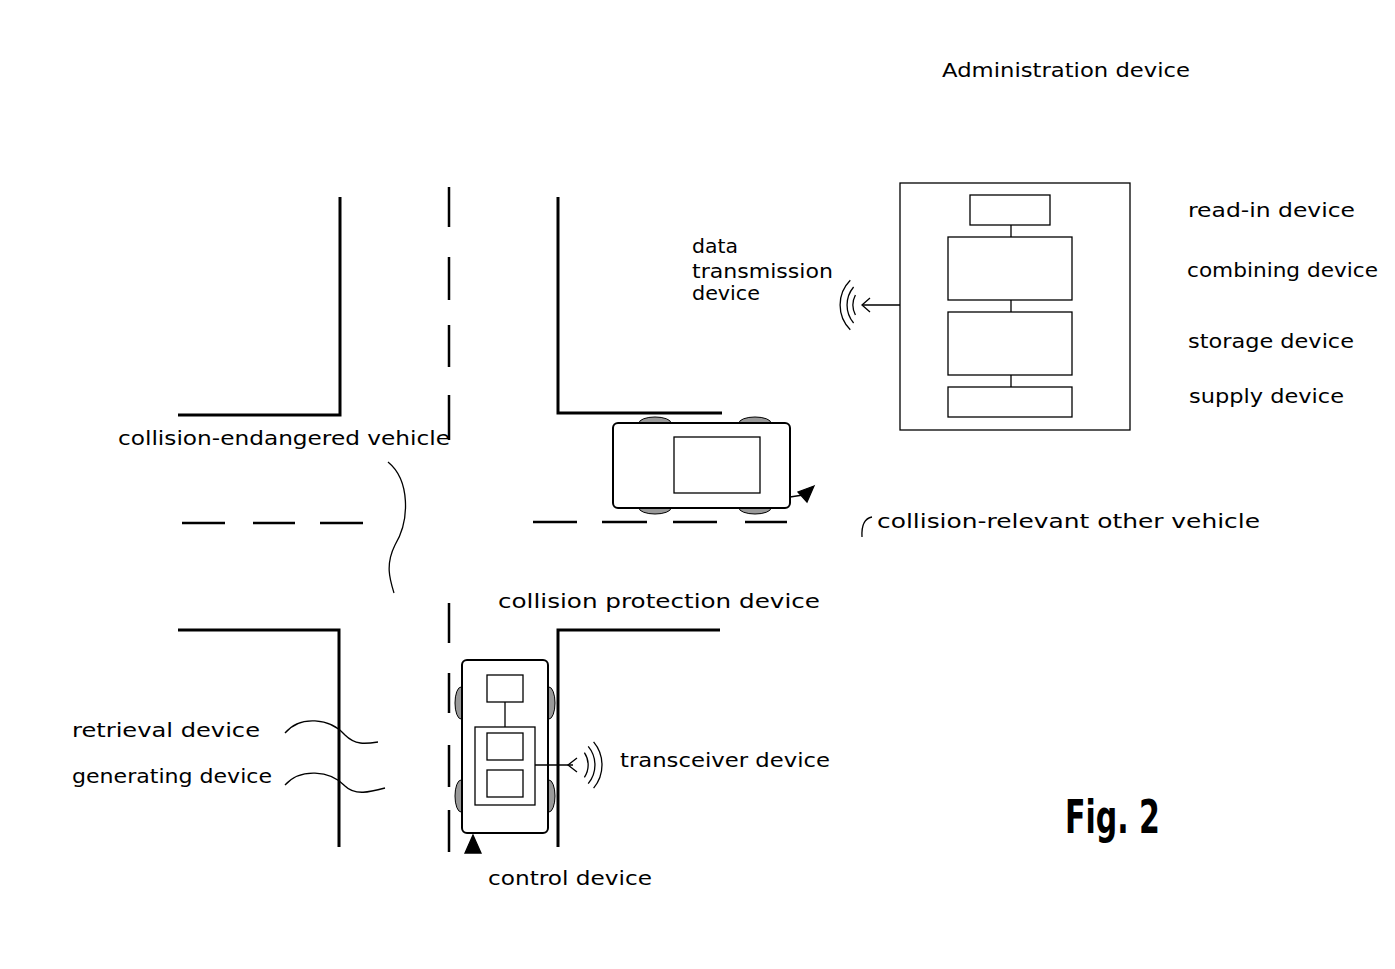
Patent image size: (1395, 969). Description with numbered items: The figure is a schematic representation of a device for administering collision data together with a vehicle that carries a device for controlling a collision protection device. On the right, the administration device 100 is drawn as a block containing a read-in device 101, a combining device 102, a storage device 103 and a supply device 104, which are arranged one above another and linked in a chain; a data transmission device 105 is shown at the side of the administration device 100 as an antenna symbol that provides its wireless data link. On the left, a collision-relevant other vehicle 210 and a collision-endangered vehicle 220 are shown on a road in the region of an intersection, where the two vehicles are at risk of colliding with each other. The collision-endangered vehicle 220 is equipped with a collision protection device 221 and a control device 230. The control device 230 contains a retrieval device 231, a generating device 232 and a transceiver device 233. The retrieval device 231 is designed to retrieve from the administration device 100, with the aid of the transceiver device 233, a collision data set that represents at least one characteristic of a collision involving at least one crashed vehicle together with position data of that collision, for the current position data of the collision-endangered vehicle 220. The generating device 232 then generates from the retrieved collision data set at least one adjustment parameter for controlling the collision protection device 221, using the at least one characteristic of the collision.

The administration device 100 is at (916, 171).
The read-in device 101 is at (1050, 210).
The combining device 102 is at (1072, 268).
The storage device 103 is at (1072, 342).
The supply device 104 is at (1072, 395).
The data transmission device 105 is at (880, 305).
The collision-relevant other vehicle 210 is at (803, 522).
The collision-endangered vehicle 220 is at (453, 665).
The collision protection device 221 is at (500, 675).
The control device 230 is at (467, 798).
The retrieval device 231 is at (487, 745).
The generating device 232 is at (487, 780).
The transceiver device 233 is at (563, 770).